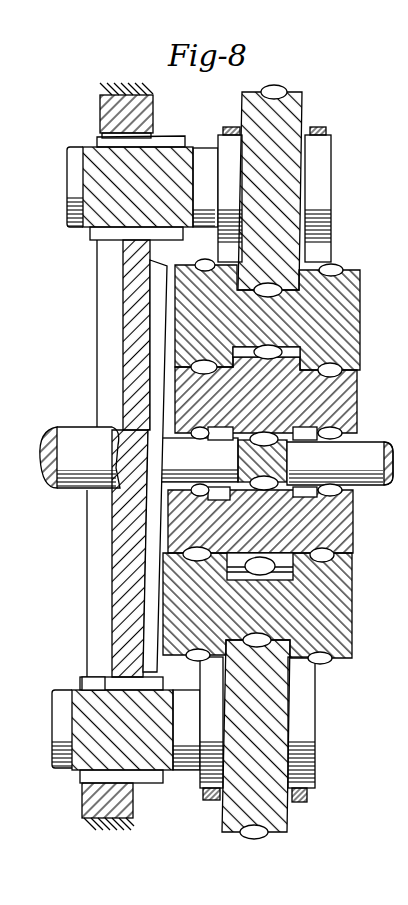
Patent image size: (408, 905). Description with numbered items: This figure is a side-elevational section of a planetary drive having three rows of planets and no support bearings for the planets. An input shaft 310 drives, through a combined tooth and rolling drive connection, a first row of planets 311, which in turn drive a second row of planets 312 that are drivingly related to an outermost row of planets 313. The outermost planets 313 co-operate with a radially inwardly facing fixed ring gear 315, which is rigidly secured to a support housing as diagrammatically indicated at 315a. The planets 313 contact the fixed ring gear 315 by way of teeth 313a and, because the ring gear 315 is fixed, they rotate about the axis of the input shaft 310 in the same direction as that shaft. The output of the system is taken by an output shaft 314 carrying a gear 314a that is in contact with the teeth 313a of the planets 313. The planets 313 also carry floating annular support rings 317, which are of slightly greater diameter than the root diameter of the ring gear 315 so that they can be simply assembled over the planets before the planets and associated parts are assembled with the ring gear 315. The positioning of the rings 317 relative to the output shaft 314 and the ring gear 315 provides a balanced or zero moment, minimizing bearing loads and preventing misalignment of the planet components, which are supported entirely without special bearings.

The input shaft 310 is at (384, 450).
The first row of planets 311 is at (352, 390).
The second row of planets 312 is at (352, 300).
The outermost row of planets 313 is at (118, 178).
The teeth 313a is at (100, 143).
The output shaft 314 is at (70, 432).
The gear 314a is at (135, 300).
The fixed ring gear 315 is at (109, 112).
The rigid securing to support housing 315a is at (131, 64).
The annular support rings 317 is at (232, 126).